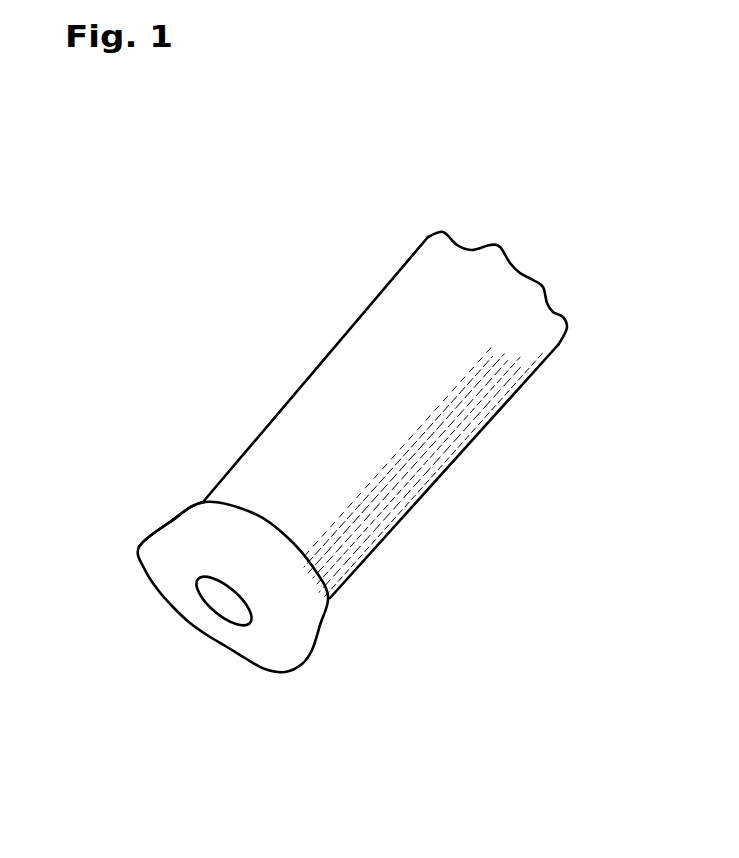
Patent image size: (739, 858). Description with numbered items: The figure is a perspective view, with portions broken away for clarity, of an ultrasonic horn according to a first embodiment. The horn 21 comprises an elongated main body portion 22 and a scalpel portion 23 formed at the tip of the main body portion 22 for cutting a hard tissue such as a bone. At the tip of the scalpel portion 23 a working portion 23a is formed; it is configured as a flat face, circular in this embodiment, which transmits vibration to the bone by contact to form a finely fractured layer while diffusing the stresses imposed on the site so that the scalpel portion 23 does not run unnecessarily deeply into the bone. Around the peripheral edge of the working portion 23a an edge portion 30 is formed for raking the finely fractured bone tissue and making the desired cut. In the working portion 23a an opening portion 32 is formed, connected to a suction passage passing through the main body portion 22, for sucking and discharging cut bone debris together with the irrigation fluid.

The horn 21 is at (362, 493).
The main body portion 22 is at (448, 410).
The scalpel portion 23 is at (308, 628).
The working portion 23a is at (262, 647).
The edge portion 30 is at (193, 540).
The opening portion 32 is at (217, 603).